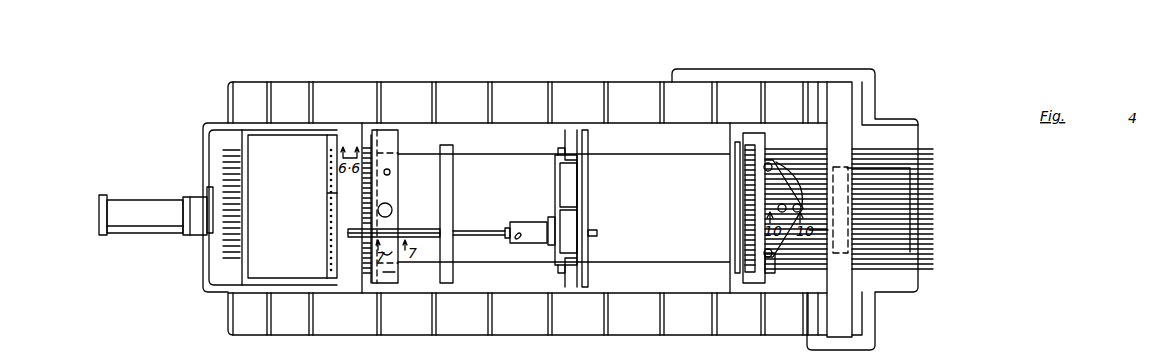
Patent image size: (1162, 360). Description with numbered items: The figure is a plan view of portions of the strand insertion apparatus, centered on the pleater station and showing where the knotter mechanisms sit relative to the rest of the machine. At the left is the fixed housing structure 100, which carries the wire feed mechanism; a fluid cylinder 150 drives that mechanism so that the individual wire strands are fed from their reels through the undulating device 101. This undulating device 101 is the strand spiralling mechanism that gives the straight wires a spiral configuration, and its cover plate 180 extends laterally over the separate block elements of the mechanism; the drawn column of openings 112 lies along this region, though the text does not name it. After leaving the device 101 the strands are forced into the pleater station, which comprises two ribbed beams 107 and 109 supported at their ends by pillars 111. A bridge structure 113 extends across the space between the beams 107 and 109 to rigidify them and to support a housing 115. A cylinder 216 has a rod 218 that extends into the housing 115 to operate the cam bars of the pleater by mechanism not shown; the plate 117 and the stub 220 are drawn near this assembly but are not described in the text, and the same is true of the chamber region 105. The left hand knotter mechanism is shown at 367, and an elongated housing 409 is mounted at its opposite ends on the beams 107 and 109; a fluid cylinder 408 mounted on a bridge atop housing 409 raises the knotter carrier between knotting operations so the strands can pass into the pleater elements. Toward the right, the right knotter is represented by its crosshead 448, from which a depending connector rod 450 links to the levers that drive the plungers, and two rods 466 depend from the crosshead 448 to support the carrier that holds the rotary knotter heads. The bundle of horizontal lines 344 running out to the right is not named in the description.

The fixed housing structure 100 is at (305, 219).
The undulating device 101 is at (350, 268).
The drive chamber 105 is at (692, 227).
The ribbed beam 107 is at (575, 317).
The ribbed beam 109 is at (573, 95).
The pillars 111 is at (862, 93).
The cartridge perforations 112 is at (330, 240).
The bridge structure 113 is at (581, 185).
The housing 115 is at (535, 238).
The partition plate 117 is at (453, 176).
The fluid cylinder 150 is at (130, 233).
The cover plate 180 is at (330, 173).
The cylinder 216 is at (385, 229).
The rod 218 is at (465, 230).
The stub 220 is at (597, 232).
The conductors 344 is at (927, 150).
The left hand knotter mechanism 367 is at (384, 134).
The fluid cylinder 408 is at (392, 204).
The elongated housing 409 is at (390, 272).
The crosshead 448 is at (770, 196).
The connector rod 450 is at (777, 162).
The rods 466 is at (764, 167).